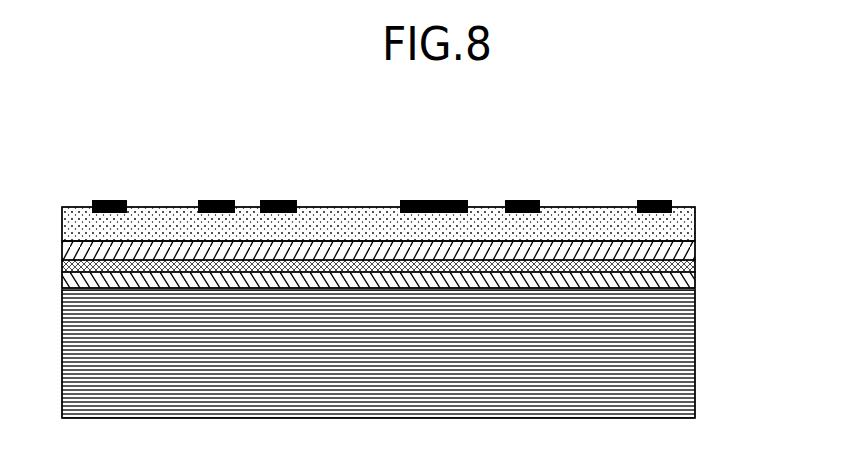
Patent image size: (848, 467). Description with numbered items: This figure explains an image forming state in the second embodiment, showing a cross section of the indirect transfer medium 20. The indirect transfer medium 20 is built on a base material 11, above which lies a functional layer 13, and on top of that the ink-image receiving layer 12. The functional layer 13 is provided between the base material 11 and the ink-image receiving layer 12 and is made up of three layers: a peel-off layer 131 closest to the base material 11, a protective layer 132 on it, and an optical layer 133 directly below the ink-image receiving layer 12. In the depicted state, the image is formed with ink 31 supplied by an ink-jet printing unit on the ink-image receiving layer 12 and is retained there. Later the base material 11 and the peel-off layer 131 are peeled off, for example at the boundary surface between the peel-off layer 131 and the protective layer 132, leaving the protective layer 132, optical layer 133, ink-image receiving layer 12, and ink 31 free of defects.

The indirect transfer medium 20 is at (53, 207).
The ink-image receiving layer 12 is at (695, 211).
The functional layer 13 is at (768, 232).
The optical layer 133 is at (695, 249).
The protective layer 132 is at (695, 267).
The peel-off layer 131 is at (695, 285).
The base material 11 is at (682, 372).
The ink 31 is at (218, 208).